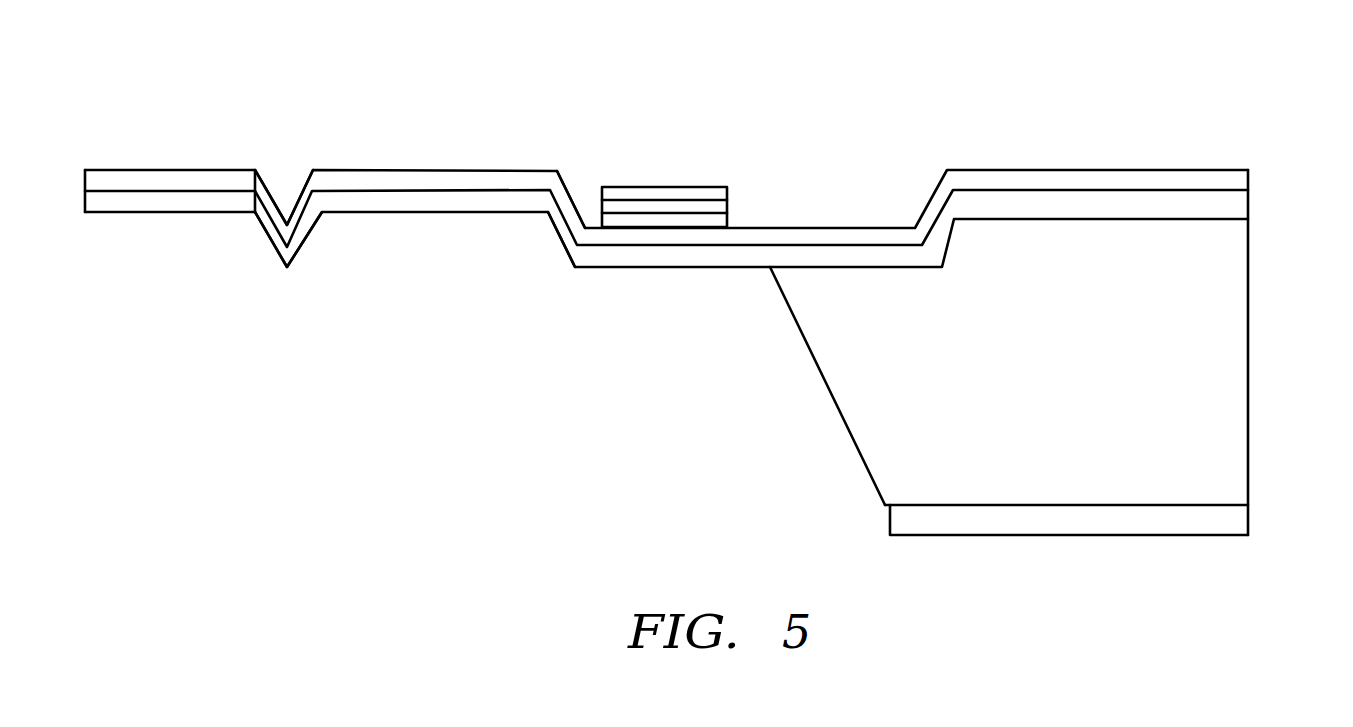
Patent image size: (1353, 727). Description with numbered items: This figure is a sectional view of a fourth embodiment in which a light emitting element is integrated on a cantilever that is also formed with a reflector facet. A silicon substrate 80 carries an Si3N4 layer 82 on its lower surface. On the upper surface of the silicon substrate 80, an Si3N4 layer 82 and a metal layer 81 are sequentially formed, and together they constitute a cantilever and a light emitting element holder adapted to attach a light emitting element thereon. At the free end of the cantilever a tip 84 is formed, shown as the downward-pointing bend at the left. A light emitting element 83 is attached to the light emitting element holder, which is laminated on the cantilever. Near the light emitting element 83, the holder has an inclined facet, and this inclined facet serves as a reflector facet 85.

The silicon substrate 80 is at (1238, 393).
The metal layer 81 is at (1182, 180).
The Si3N4 layer 82 is at (1230, 203).
The light emitting element 83 is at (711, 187).
The tip 84 is at (289, 268).
The reflector facet 85 is at (572, 190).